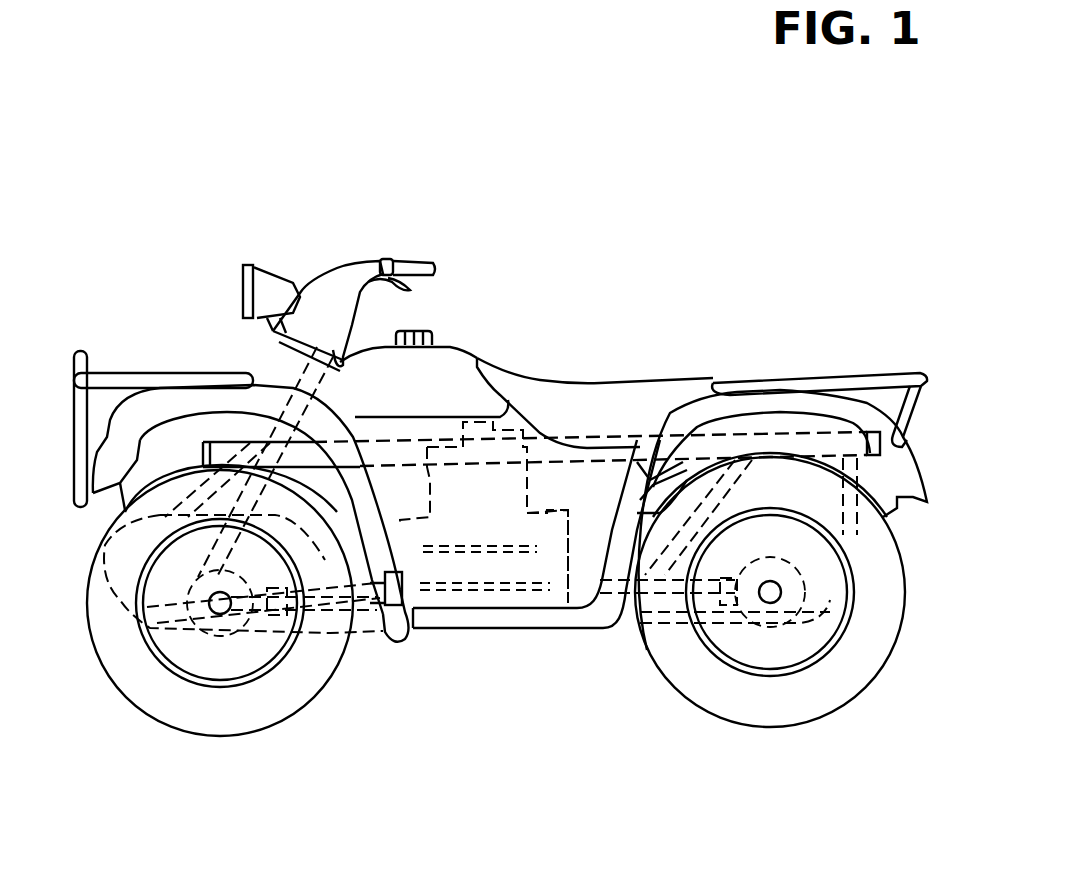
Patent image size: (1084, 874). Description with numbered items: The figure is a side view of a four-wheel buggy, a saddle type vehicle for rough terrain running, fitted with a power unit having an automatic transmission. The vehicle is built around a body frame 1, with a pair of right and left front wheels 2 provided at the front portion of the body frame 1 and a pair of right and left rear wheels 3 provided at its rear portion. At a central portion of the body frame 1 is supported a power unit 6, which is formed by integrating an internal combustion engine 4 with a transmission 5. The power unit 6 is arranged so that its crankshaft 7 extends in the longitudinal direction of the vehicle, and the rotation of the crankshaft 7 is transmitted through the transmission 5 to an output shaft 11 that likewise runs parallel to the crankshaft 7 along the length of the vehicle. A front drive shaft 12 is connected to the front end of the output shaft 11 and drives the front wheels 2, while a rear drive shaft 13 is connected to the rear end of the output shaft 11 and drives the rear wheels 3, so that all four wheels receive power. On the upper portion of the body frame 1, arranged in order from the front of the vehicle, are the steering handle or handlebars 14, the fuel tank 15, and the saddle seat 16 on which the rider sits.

The body frame 1 is at (757, 447).
The front wheels 2 is at (202, 720).
The rear wheels 3 is at (792, 703).
The internal combustion engine 4 is at (467, 473).
The transmission 5 is at (552, 520).
The power unit 6 is at (556, 153).
The crankshaft 7 is at (458, 553).
The output shaft 11 is at (513, 588).
The front drive shaft 12 is at (319, 593).
The rear drive shaft 13 is at (665, 585).
The handlebars 14 is at (410, 257).
The fuel tank 15 is at (453, 347).
The saddle seat 16 is at (663, 387).